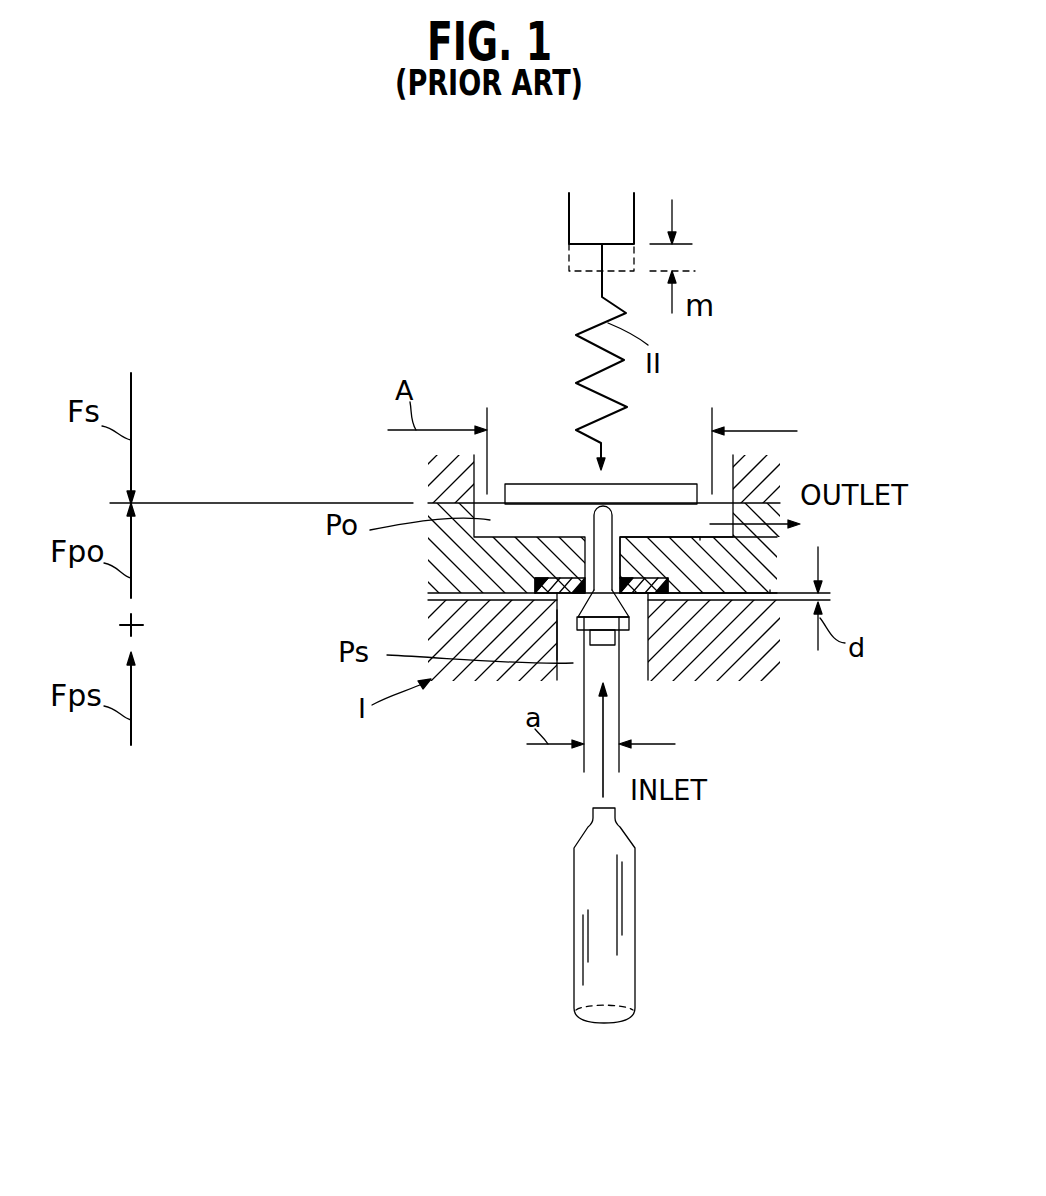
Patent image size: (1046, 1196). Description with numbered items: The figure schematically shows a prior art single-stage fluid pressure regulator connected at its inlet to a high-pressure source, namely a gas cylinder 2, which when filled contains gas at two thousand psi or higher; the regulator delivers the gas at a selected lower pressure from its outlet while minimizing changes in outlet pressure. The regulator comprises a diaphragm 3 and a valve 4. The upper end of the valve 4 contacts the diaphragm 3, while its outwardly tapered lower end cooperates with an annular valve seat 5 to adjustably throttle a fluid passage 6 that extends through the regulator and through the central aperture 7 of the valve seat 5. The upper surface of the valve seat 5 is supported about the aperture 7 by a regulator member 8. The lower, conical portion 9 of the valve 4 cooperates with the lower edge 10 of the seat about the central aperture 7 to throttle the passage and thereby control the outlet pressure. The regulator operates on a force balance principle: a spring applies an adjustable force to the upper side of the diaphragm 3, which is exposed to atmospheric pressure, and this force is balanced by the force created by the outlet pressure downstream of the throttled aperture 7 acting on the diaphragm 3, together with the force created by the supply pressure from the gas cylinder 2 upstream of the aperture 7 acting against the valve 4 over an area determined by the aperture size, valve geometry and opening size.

The gas cylinder 2 is at (628, 905).
The diaphragm 3 is at (708, 508).
The valve 4 is at (608, 640).
The valve seat 5 is at (675, 585).
The fluid passage 6 is at (540, 673).
The central aperture 7 is at (530, 574).
The regulator member 8 is at (765, 580).
The conical portion 9 is at (570, 607).
The lower edge 10 is at (517, 588).